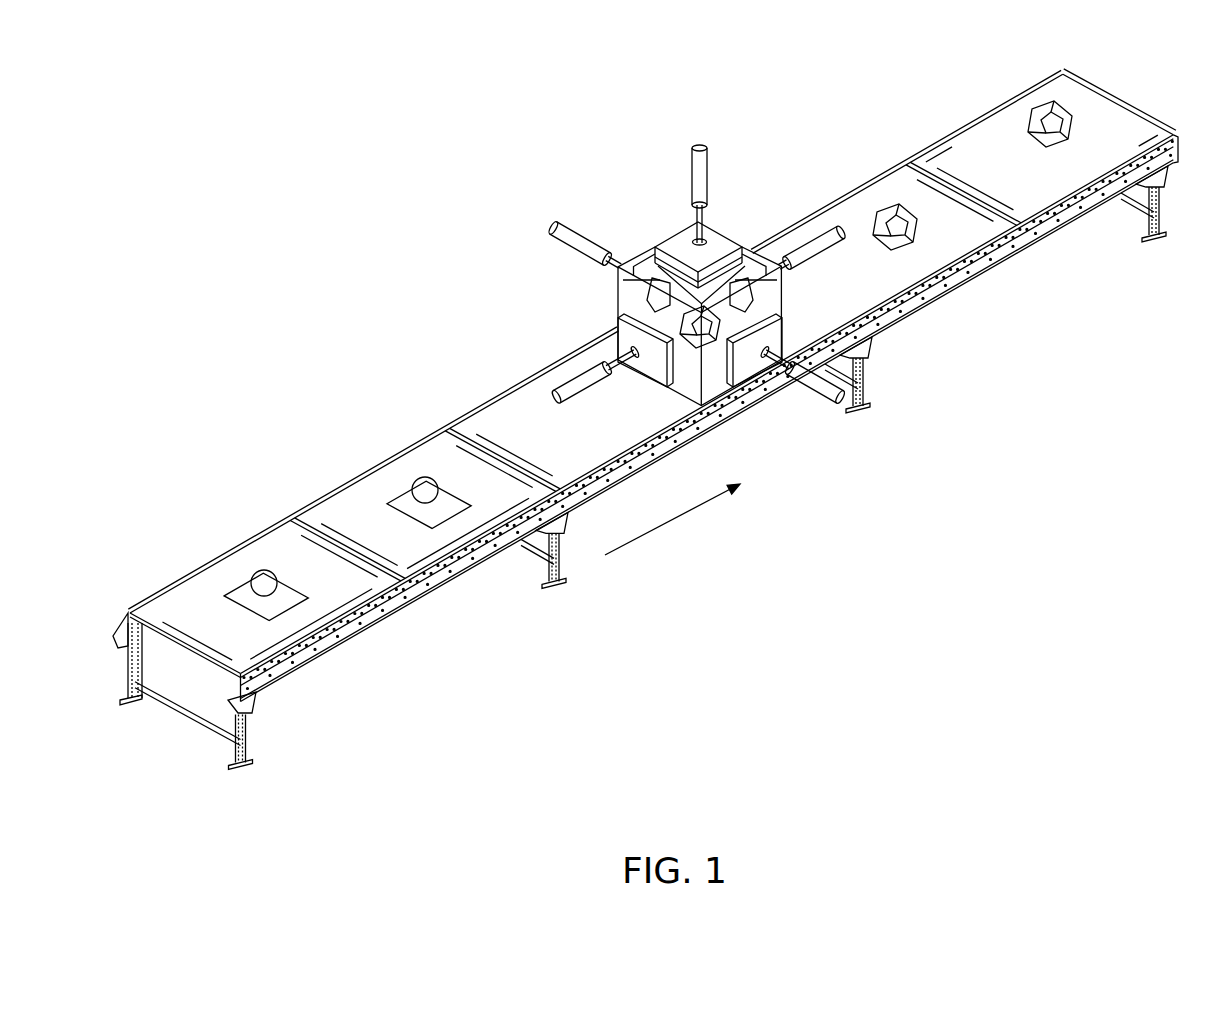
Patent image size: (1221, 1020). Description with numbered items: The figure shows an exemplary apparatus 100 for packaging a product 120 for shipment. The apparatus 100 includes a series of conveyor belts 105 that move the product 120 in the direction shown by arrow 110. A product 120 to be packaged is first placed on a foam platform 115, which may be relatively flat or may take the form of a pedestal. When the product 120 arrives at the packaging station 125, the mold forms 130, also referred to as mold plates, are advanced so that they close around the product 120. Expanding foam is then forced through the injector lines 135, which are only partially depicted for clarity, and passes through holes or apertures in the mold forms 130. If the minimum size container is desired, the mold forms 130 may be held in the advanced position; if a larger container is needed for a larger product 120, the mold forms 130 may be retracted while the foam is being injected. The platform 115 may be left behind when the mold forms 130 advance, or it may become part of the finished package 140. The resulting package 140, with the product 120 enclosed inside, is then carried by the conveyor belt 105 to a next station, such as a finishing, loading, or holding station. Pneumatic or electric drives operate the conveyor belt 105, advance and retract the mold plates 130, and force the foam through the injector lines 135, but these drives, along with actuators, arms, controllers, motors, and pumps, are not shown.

The apparatus 100 is at (330, 184).
The conveyor belts 105 is at (358, 498).
The arrow 110 is at (672, 519).
The foam platform 115 is at (236, 593).
The product 120 is at (258, 568).
The packaging station 125 is at (786, 422).
The mold forms 130 is at (640, 262).
The injector lines 135 is at (563, 236).
The package 140 is at (893, 203).